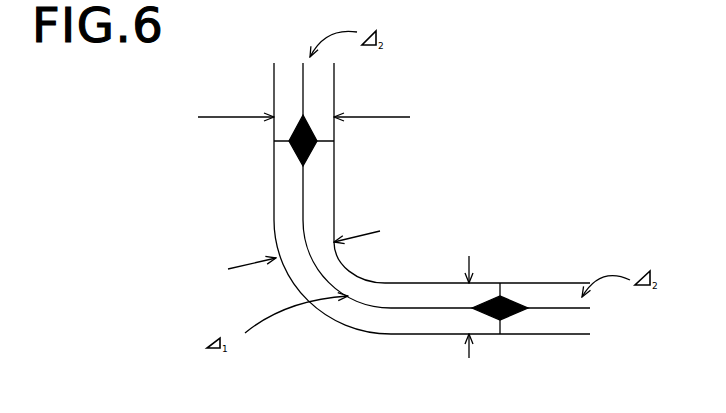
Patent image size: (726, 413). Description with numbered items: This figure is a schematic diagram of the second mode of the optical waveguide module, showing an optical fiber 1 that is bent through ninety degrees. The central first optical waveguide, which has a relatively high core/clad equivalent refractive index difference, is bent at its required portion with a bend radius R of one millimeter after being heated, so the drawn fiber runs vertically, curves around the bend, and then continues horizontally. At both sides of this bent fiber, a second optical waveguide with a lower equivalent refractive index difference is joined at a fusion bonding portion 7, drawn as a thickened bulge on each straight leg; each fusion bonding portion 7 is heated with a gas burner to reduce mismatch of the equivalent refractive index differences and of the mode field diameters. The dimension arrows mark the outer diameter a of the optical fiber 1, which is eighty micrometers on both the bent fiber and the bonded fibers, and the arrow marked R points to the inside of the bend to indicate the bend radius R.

The optical fiber 1 is at (560, 283).
The fusion bonding portion 7 is at (290, 141).
The outer diameter a is at (332, 242).
The bend radius R is at (335, 282).